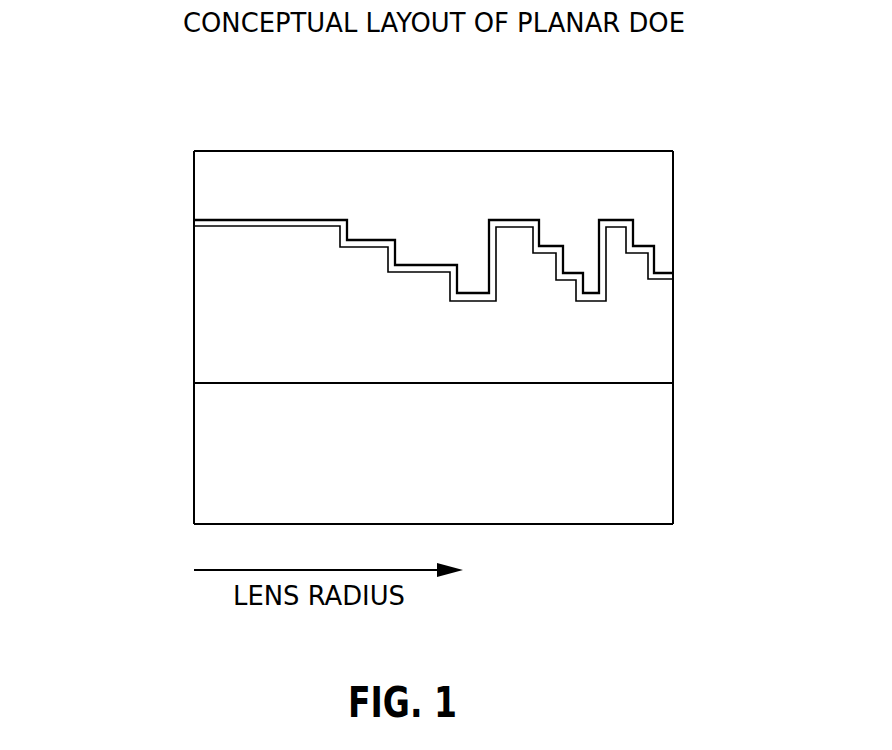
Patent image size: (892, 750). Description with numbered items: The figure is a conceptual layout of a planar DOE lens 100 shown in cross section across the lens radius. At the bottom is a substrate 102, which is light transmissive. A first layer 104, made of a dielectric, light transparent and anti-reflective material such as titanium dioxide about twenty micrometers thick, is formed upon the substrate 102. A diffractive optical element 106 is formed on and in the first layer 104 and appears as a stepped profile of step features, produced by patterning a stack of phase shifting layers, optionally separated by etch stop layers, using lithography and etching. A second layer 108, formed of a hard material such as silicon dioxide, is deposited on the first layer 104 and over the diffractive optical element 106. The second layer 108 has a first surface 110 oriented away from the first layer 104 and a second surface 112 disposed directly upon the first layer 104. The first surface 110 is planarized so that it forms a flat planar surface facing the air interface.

The planar DOE lens 100 is at (141, 114).
The substrate 102 is at (658, 448).
The first layer 104 is at (217, 310).
The diffractive optical element 106 is at (649, 263).
The second layer 108 is at (658, 188).
The first surface 110 is at (435, 151).
The second surface 112 is at (293, 219).